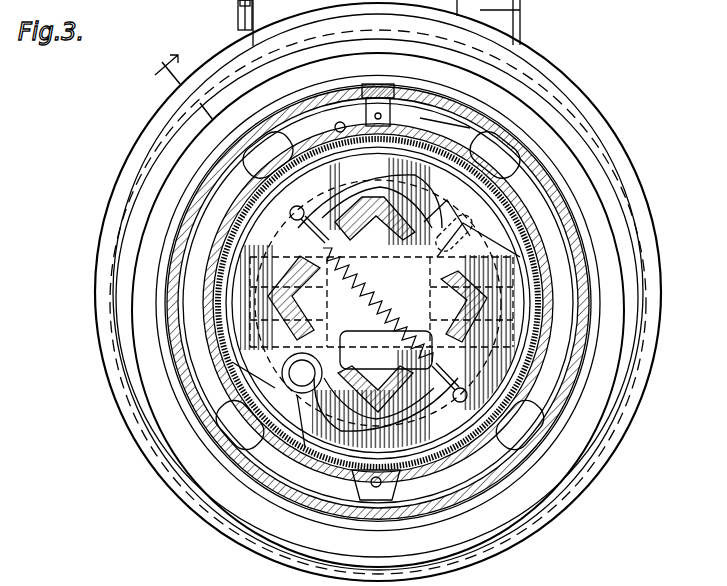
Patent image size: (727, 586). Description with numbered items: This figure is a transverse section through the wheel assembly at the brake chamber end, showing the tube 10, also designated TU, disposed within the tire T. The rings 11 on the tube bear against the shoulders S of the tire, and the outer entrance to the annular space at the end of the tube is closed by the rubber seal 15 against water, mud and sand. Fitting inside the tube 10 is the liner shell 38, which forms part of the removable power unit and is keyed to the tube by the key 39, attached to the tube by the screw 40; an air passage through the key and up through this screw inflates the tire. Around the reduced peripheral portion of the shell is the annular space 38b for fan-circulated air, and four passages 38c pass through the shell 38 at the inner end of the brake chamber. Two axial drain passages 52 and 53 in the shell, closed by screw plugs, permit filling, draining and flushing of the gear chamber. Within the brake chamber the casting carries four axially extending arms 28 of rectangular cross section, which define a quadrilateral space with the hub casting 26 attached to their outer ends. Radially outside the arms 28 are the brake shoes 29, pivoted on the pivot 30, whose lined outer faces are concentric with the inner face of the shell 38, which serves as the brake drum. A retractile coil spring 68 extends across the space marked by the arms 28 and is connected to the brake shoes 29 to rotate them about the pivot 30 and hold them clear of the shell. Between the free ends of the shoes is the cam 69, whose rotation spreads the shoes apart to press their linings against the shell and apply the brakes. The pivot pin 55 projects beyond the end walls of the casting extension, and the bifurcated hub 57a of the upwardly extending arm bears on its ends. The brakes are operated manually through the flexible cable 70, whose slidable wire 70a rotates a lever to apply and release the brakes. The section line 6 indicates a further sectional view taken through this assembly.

The tire T is at (582, 96).
The tube TU is at (313, 303).
The shoulders S is at (435, 303).
The flexible shaft or cable 70 is at (240, 30).
The slidable wire 70a is at (240, 6).
The rubber seal 15 is at (646, 192).
The ring 11 is at (562, 188).
The tube 10 is at (335, 302).
The shell 38 is at (378, 284).
The annular space 38b is at (433, 118).
The passages 38c is at (262, 150).
The drain passage 53 is at (340, 122).
The key 39 is at (372, 92).
The screw 40 is at (386, 96).
The drain passage 52 is at (376, 488).
The pivot pin 55 is at (386, 284).
The brake shoes 29 is at (345, 214).
The retractile coil spring 68 is at (369, 305).
The hub casting 26 is at (362, 340).
The arms 28 is at (368, 208).
The bifurcated hub 57a is at (305, 201).
The cam 69 is at (450, 222).
The pivot 30 is at (295, 381).
The section line 6 is at (306, 238).